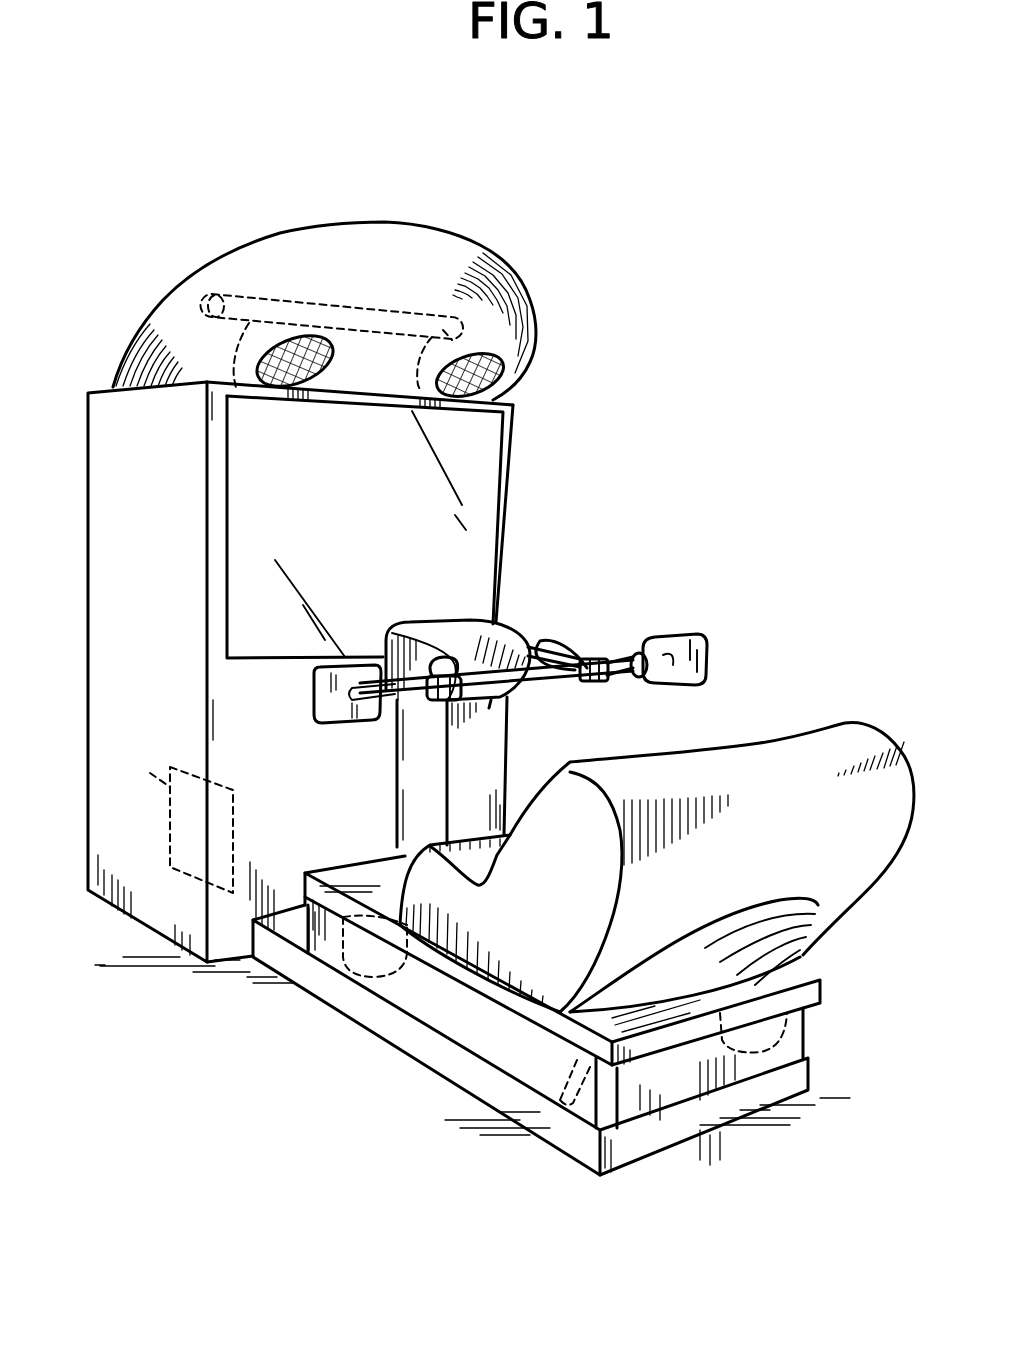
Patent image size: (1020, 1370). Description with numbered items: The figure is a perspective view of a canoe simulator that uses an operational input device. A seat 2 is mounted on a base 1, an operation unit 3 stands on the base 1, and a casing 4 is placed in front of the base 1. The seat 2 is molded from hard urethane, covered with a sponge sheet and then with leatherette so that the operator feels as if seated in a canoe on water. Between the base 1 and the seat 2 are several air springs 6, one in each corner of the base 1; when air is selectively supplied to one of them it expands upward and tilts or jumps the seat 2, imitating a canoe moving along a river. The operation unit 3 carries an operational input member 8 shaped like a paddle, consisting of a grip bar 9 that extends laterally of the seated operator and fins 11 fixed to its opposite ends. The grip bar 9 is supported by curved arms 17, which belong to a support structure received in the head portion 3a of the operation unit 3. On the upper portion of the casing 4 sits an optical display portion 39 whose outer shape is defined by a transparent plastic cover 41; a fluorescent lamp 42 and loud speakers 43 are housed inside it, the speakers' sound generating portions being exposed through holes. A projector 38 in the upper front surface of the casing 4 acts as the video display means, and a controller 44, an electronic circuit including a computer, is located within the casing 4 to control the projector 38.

The base 1 is at (443, 1053).
The seat 2 is at (795, 762).
The operation unit 3 is at (466, 613).
The head portion 3a is at (452, 628).
The casing 4 is at (123, 561).
The air springs 6 is at (332, 958).
The operational input member 8 is at (605, 582).
The grip bar 9 is at (580, 657).
The fins 11 is at (330, 715).
The curved arms 17 is at (390, 640).
The projector 38 is at (475, 465).
The optical display portion 39 is at (402, 226).
The transparent plastic cover 41 is at (490, 250).
The fluorescent lamp 42 is at (265, 295).
The loud speakers 43 is at (432, 382).
The controller 44 is at (179, 816).